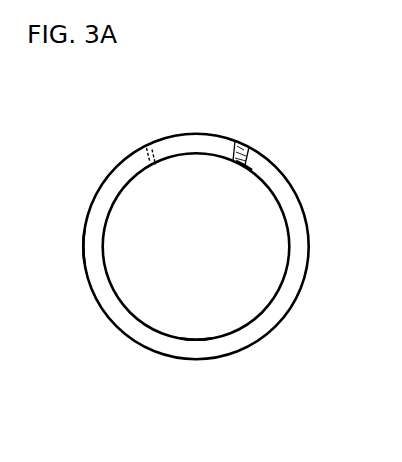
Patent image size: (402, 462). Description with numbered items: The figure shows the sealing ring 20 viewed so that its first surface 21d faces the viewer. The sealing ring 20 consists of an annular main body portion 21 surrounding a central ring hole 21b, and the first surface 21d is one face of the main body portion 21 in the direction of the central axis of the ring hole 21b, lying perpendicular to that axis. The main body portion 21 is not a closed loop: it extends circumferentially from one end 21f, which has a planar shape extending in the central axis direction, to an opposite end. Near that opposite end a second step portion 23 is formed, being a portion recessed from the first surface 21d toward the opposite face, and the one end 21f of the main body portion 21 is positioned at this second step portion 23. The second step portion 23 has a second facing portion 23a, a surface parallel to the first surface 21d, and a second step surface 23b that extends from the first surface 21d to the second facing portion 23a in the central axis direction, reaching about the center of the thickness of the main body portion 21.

The sealing ring 20 is at (194, 252).
The main body portion 21 is at (101, 187).
The ring hole 21b is at (188, 333).
The first surface 21d is at (97, 266).
The one end 21f is at (243, 158).
The second step portion 23 is at (206, 114).
The second facing portion 23a is at (241, 151).
The second step surface 23b is at (243, 158).